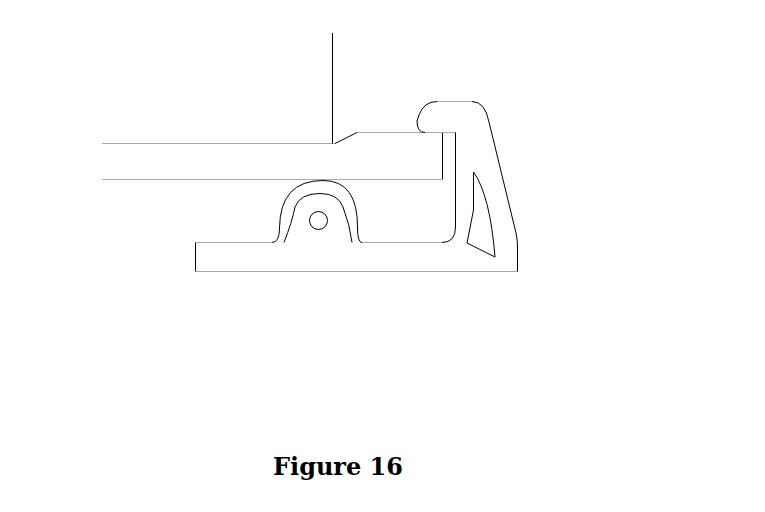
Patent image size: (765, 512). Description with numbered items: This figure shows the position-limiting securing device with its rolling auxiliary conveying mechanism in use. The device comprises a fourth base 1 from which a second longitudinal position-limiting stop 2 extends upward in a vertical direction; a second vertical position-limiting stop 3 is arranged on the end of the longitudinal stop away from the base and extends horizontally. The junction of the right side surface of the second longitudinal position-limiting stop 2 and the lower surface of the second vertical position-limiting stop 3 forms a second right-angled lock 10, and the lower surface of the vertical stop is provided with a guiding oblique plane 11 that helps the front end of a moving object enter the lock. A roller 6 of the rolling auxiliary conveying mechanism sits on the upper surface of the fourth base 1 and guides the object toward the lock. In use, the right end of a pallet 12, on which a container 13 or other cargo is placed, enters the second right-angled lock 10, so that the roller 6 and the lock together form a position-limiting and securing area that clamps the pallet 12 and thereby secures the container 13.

The fourth base 1 is at (357, 295).
The second longitudinal position-limiting stop 2 is at (552, 113).
The second vertical position-limiting stop 3 is at (488, 45).
The roller 6 is at (203, 315).
The second right-angled lock 10 is at (425, 302).
The guiding oblique plane 11 is at (417, 120).
The pallet 12 is at (227, 158).
The container 13 is at (332, 88).